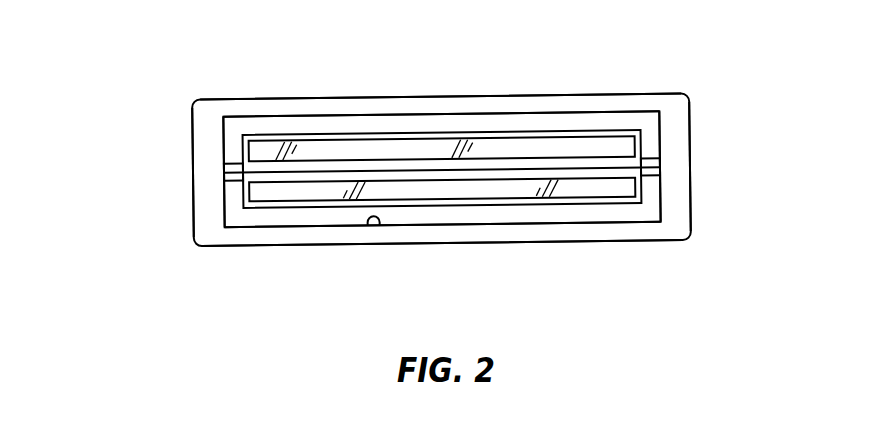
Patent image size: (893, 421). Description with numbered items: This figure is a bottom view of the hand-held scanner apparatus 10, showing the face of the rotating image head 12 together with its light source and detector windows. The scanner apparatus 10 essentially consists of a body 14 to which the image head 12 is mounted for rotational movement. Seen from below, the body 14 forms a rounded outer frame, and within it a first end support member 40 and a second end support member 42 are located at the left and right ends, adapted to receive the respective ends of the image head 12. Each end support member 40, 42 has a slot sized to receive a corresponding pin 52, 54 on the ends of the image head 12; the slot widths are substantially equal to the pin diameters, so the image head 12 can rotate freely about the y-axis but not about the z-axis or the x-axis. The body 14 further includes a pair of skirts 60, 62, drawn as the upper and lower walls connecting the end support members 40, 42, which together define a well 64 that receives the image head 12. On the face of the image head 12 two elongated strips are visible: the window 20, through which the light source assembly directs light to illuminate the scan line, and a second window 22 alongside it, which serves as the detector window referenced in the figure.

The hand-held scanner apparatus 10 is at (400, 168).
The image head 12 is at (491, 170).
The body 14 is at (180, 143).
The window 20 is at (537, 138).
The second plate 22 is at (512, 198).
The first end support member 40 is at (193, 203).
The second end support member 42 is at (690, 133).
The pin 52 is at (228, 164).
The pin 54 is at (649, 176).
The skirt 60 is at (442, 96).
The skirt 62 is at (229, 246).
The well 64 is at (367, 225).